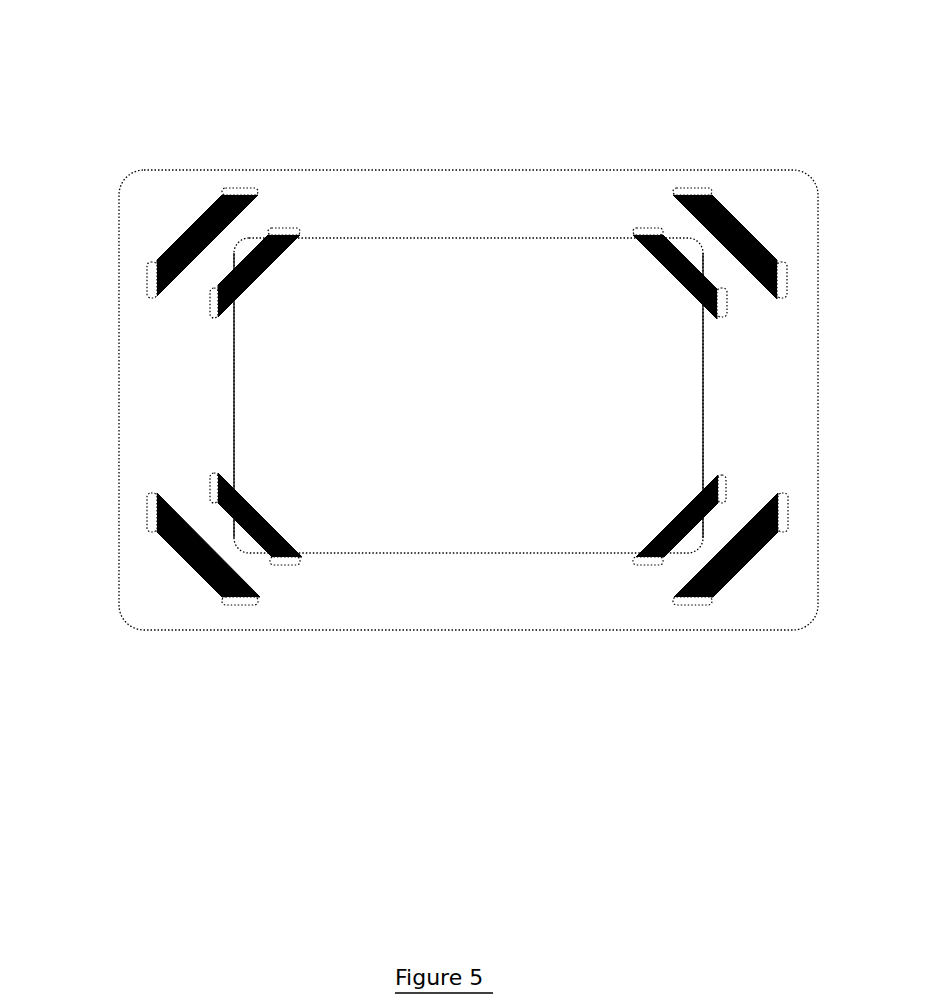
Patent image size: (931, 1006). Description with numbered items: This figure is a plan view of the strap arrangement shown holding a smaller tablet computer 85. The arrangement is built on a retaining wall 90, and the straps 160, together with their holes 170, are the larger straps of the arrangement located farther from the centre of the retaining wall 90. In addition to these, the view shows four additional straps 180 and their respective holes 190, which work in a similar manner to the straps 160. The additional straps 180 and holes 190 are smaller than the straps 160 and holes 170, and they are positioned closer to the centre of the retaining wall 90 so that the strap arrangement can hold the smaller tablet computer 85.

The smaller tablet computer 85 is at (575, 337).
The retaining wall 90 is at (316, 617).
The straps 160 is at (188, 217).
The holes 170 is at (688, 619).
The additional straps 180 is at (310, 274).
The holes 190 is at (196, 317).